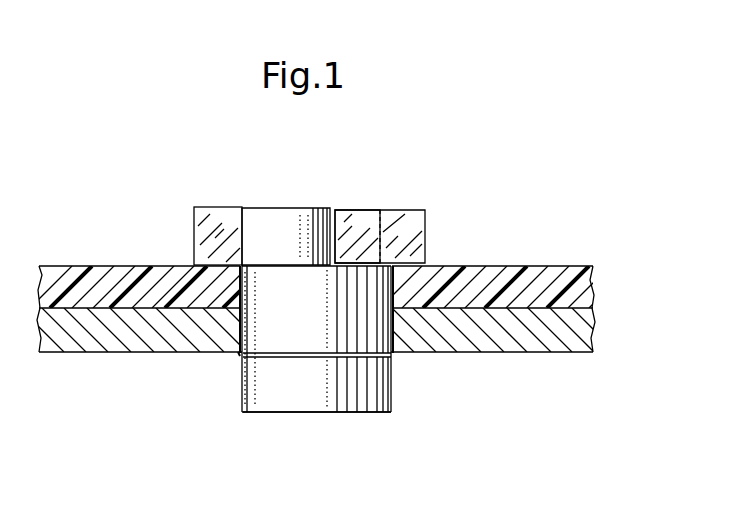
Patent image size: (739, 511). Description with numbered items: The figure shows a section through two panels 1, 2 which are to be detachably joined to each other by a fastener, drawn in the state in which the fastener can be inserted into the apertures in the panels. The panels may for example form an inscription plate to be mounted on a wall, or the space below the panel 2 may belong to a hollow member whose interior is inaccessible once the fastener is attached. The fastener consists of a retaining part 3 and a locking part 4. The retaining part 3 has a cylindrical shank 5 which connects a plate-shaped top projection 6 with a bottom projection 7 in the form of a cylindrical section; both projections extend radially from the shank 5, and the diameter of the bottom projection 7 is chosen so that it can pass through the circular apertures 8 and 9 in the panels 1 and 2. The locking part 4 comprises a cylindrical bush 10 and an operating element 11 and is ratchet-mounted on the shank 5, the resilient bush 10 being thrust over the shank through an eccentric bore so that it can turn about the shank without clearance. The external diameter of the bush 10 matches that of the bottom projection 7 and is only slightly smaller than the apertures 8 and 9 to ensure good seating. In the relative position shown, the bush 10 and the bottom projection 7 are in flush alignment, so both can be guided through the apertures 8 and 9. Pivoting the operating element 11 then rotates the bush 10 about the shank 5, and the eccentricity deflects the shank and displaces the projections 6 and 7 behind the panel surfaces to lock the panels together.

The panel 1 is at (84, 280).
The panel 2 is at (90, 342).
The retaining part 3 is at (253, 204).
The locking part 4 is at (403, 205).
The cylindrical shank 5 is at (290, 223).
The top projection 6 is at (215, 221).
The bottom projection 7 is at (270, 393).
The aperture 8 is at (240, 357).
The aperture 9 is at (393, 354).
The cylindrical bush 10 is at (300, 333).
The operating element 11 is at (415, 233).